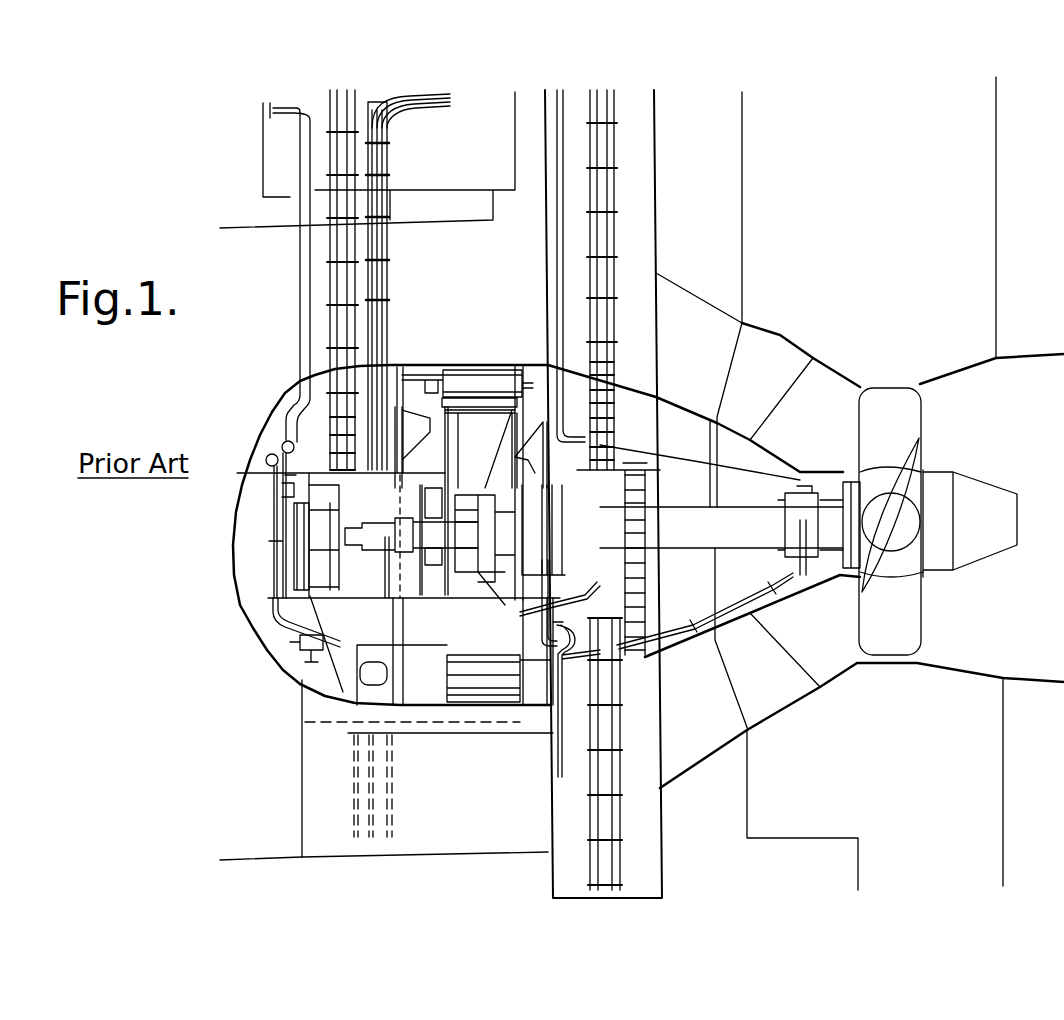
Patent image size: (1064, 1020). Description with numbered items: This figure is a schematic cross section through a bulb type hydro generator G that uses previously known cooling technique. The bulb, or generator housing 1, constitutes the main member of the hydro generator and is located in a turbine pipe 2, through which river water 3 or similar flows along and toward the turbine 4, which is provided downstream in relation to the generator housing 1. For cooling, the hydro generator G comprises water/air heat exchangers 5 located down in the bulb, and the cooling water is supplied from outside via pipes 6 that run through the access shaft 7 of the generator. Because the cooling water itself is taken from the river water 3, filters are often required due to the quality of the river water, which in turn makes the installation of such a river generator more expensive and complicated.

The generator housing 1 is at (672, 399).
The turbine pipe 2 is at (330, 858).
The river water 3 is at (468, 827).
The turbine 4 is at (885, 410).
The water/air heat exchangers 5 is at (285, 570).
The pipes 6 is at (302, 348).
The access shaft 7 is at (320, 302).
The hydro generator G is at (290, 665).